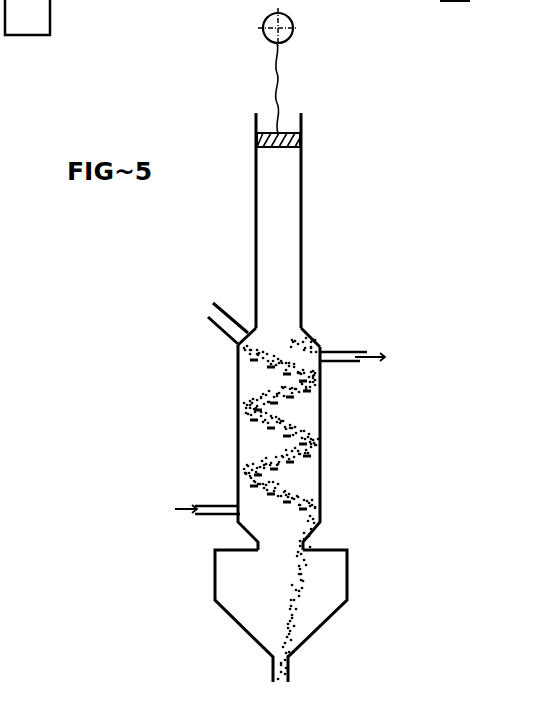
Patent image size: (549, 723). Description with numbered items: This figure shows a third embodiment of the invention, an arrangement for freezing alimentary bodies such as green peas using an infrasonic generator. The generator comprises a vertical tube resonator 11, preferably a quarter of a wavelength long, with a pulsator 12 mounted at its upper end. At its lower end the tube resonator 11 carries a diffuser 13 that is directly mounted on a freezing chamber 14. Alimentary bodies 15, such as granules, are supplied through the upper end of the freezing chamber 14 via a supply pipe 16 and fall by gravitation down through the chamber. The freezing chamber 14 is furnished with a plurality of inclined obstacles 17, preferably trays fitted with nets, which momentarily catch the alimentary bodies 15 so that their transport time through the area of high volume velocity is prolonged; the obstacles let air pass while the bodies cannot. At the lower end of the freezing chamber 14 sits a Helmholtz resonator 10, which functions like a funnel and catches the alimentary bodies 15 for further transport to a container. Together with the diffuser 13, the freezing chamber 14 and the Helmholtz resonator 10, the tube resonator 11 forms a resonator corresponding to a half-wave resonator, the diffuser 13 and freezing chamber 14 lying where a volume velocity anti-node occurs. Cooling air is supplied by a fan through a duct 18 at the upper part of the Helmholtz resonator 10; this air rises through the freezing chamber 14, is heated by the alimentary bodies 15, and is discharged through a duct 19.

The Helmholtz resonator 10 is at (330, 578).
The tube resonator 11 is at (285, 227).
The pulsator 12 is at (301, 137).
The diffuser 13 is at (297, 338).
The freezing chamber 14 is at (307, 410).
The alimentary bodies 15 is at (250, 352).
The supply pipe 16 is at (213, 315).
The inclined obstacles 17 is at (257, 437).
The duct 18 is at (212, 513).
The duct 19 is at (360, 361).